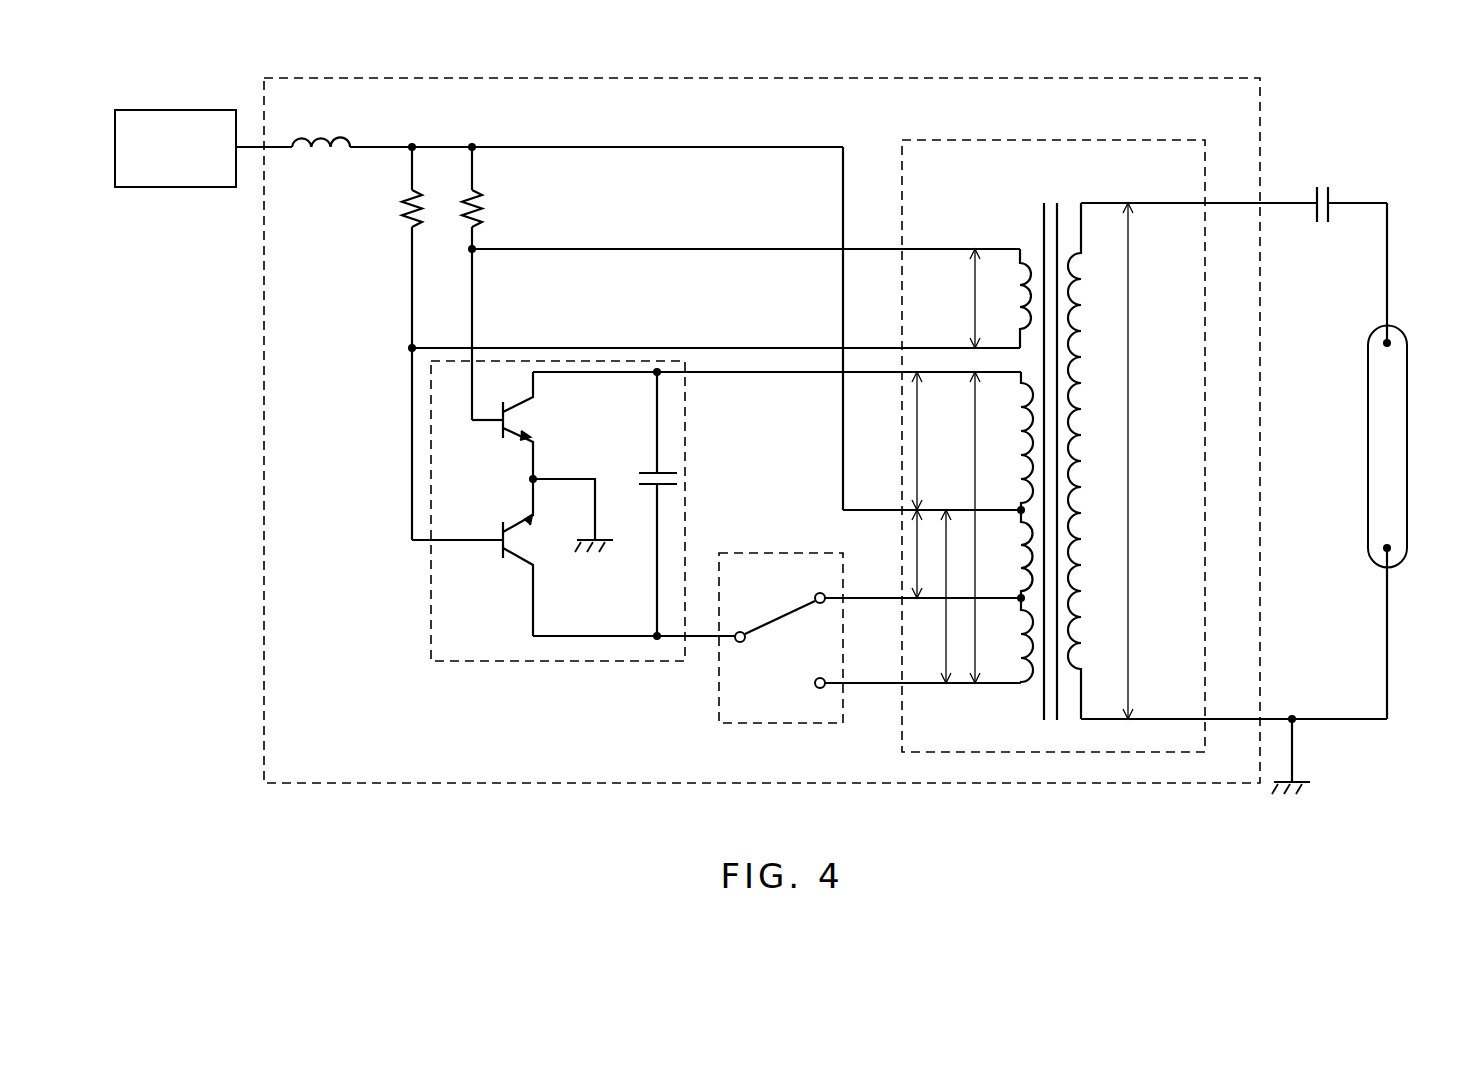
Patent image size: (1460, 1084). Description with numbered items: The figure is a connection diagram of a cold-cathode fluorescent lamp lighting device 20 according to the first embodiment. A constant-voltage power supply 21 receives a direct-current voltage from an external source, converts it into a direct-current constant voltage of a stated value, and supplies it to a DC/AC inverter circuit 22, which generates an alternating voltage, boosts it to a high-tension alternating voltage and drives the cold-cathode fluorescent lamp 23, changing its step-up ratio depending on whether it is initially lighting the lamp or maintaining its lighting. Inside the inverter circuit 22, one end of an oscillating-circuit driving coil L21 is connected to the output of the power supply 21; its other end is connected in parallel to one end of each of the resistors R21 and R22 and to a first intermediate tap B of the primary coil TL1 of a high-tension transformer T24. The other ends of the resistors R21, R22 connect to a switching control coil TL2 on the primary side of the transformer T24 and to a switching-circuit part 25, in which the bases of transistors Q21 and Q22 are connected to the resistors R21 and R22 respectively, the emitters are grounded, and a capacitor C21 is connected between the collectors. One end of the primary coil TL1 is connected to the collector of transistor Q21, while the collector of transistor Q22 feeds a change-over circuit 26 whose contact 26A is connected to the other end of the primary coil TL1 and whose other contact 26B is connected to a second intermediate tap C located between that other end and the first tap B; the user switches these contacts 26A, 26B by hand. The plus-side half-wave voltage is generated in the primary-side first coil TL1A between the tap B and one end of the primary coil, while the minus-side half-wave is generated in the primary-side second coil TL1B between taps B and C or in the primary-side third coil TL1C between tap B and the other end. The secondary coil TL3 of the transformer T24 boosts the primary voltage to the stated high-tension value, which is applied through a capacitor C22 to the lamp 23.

The cold-cathode fluorescent lamp lighting device 20 is at (1165, 45).
The constant-voltage power supply 21 is at (178, 110).
The DC/AC inverter circuit 22 is at (635, 77).
The cold-cathode fluorescent lamp 23 is at (1408, 542).
The switching-circuit part 25 is at (430, 636).
The change-over circuit 26 is at (718, 702).
The contact 26A is at (815, 686).
The other contact 26B is at (815, 594).
The oscillating-circuit driving coil L21 is at (318, 137).
The resistor R21 is at (400, 212).
The resistor R22 is at (484, 208).
The transistor Q21 is at (503, 432).
The transistor Q22 is at (503, 553).
The capacitor C21 is at (648, 473).
The capacitor C22 is at (1326, 188).
The high-tension transformer T24 is at (968, 140).
The primary coil TL1 is at (986, 688).
The primary-side first coil TL1A is at (917, 450).
The primary-side second coil TL1B is at (917, 545).
The primary-side third coil TL1C is at (946, 672).
The switching control coil TL2 is at (975, 288).
The secondary coil TL3 is at (1130, 258).
The first intermediate tap B is at (1019, 505).
The second intermediate tap C is at (1019, 596).